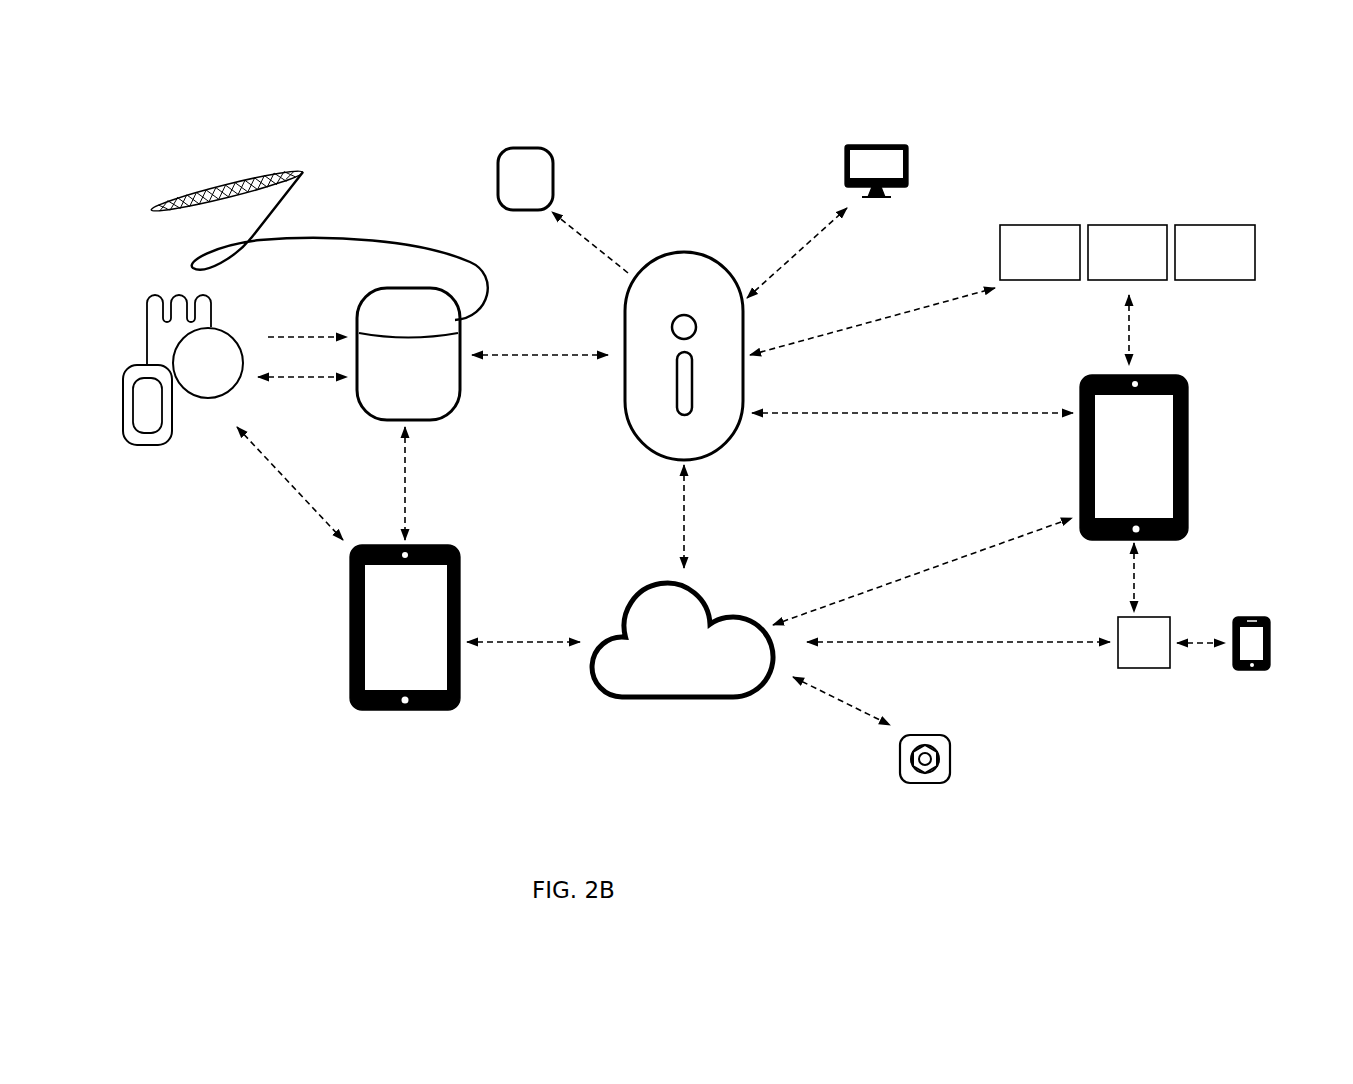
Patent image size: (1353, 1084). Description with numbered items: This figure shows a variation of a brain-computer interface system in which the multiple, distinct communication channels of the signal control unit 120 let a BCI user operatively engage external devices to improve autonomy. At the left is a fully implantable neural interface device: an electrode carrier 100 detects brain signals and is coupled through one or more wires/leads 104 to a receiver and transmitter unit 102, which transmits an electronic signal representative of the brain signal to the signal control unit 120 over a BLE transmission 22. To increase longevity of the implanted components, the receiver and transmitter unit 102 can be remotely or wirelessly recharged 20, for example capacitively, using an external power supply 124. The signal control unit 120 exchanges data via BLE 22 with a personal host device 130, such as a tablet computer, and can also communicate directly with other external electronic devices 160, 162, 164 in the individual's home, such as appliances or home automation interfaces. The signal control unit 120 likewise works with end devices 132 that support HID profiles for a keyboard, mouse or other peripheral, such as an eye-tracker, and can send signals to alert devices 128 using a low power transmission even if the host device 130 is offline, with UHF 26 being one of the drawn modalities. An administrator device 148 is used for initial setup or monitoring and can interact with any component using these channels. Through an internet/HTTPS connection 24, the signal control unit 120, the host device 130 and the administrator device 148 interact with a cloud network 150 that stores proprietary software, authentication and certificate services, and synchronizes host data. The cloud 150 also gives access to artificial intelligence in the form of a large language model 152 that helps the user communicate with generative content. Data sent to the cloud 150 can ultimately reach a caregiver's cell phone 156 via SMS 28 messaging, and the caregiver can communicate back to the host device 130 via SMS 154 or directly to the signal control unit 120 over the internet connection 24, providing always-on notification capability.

The remote recharging 20 is at (310, 333).
The BLE transmission 22 is at (313, 377).
The network/internet/HTTPS connection 24 is at (683, 492).
The UHF transmission 26 is at (593, 245).
The SMS messaging 28 is at (1200, 640).
The electrode carrier 100 is at (233, 178).
The receiver and transmitter unit 102 is at (453, 320).
The wires/leads 104 is at (433, 247).
The signal control unit 120 is at (680, 253).
The external power supply 124 is at (150, 447).
The alert devices 128 is at (553, 178).
The personal host device 130 is at (1190, 447).
The end devices 132 is at (910, 168).
The administrator device 148 is at (390, 710).
The cloud network 150 is at (687, 700).
The large language model 152 is at (922, 783).
The SMS 154 is at (1147, 668).
The caregiver's cell phone 156 is at (1250, 670).
The external electronic device 160 is at (1013, 225).
The external electronic device 162 is at (1108, 225).
The external electronic device 164 is at (1198, 225).